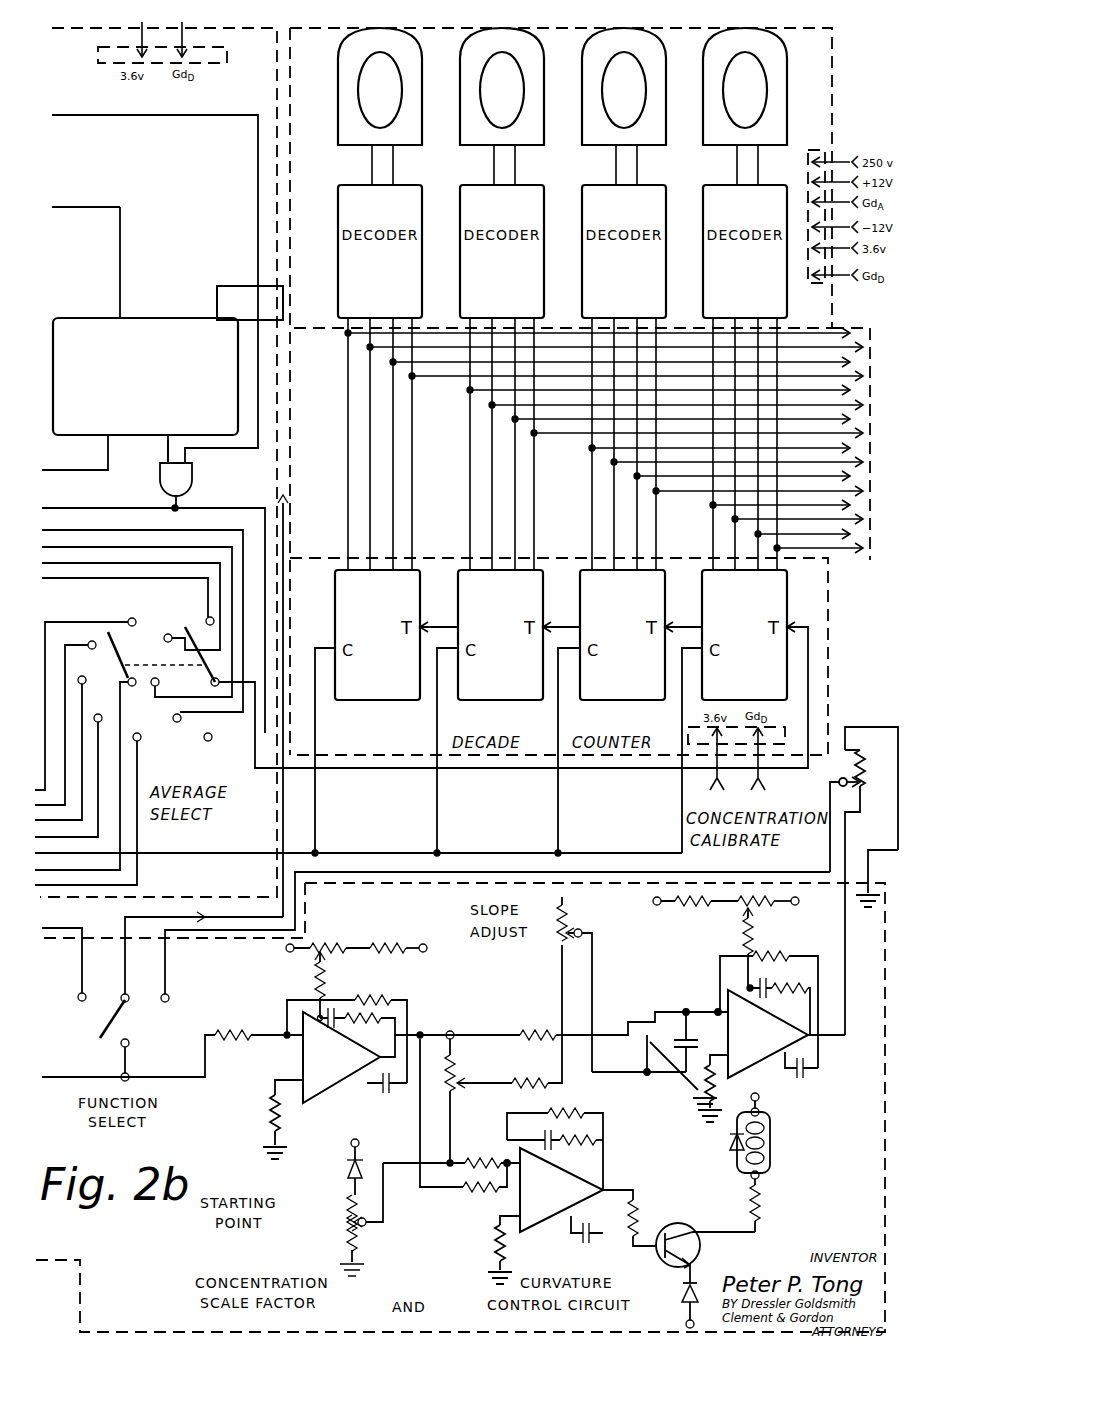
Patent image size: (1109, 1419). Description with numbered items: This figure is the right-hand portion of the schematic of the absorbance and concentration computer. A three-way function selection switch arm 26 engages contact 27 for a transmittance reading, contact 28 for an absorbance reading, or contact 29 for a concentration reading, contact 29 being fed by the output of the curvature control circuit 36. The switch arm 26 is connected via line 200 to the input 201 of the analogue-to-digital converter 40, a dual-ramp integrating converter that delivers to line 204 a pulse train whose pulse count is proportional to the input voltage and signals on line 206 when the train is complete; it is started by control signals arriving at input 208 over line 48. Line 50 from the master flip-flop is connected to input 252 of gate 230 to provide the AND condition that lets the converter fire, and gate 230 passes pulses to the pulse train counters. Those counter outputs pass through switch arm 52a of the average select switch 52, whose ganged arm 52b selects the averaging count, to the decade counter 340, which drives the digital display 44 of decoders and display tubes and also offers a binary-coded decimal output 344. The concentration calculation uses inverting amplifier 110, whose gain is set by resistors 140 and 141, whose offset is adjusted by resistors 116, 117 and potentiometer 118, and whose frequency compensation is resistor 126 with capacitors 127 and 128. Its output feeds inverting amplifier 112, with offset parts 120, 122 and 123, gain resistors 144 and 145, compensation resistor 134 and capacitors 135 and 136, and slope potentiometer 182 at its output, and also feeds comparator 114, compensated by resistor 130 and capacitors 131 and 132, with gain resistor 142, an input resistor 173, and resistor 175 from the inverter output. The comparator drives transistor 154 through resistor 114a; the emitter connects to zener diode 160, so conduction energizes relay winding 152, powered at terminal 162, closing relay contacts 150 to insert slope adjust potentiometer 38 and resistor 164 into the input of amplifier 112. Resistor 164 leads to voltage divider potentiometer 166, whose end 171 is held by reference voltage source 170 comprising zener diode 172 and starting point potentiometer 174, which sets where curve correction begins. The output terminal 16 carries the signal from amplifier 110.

The analogue-to-digital converter 40 is at (150, 322).
The line 48 is at (112, 207).
The line 50 is at (258, 218).
The input 201 is at (235, 320).
The line 204 is at (168, 455).
The line 206 is at (108, 455).
The input 208 is at (124, 318).
The gate 230 is at (190, 485).
The input 252 is at (193, 467).
The line 200 is at (290, 465).
The digital display 44 is at (324, 305).
The binary-coded decimal output 344 is at (870, 562).
The decade counter 340 is at (385, 743).
The average select switch 52 is at (185, 612).
The switch arm 52a is at (181, 656).
The switch arm 52b is at (100, 633).
The potentiometer 182 is at (858, 881).
The switch contact 27 is at (78, 1003).
The function selection switch arm 26 is at (128, 1003).
The switch contact 29 is at (170, 1004).
The switch contact 28 is at (115, 1050).
The resistor 141 is at (232, 1040).
The inverting amplifier 110 is at (379, 1089).
The resistor 140 is at (400, 1000).
The capacitor 128 is at (388, 1093).
The resistor 117 is at (326, 975).
The capacitor 127 is at (333, 1010).
The resistor 126 is at (385, 1022).
The potentiometer 118 is at (318, 945).
The resistor 116 is at (388, 945).
The output terminal 16 is at (437, 1023).
The curvature control circuit 36 is at (493, 1022).
The resistor 145 is at (536, 1030).
The potentiometer 166 is at (458, 1078).
The resistor 164 is at (540, 1072).
The curvature slope adjustment 38 is at (585, 935).
The relay contacts 150 is at (648, 1025).
The resistor 120 is at (705, 910).
The potentiometer 123 is at (752, 900).
The resistor 122 is at (756, 928).
The resistor 144 is at (748, 956).
The capacitor 135 is at (770, 988).
The resistor 134 is at (808, 975).
The inverting amplifier 112 is at (771, 1056).
The capacitor 136 is at (808, 1075).
The relay winding 152 is at (770, 1140).
The terminal 162 is at (770, 1114).
The comparator 114 is at (542, 1218).
The resistor 173 is at (475, 1160).
The end 171 is at (450, 1158).
The resistor 175 is at (482, 1192).
The zener diode 172 is at (348, 1168).
The curvature control starting point potentiometer 174 is at (360, 1214).
The reference voltage source 170 is at (378, 1224).
The resistor 142 is at (570, 1110).
The resistor 130 is at (539, 1131).
The capacitor 131 is at (565, 1145).
The capacitor 132 is at (588, 1243).
The resistor 114a is at (637, 1200).
The transistor 154 is at (682, 1223).
The zener diode 160 is at (675, 1285).